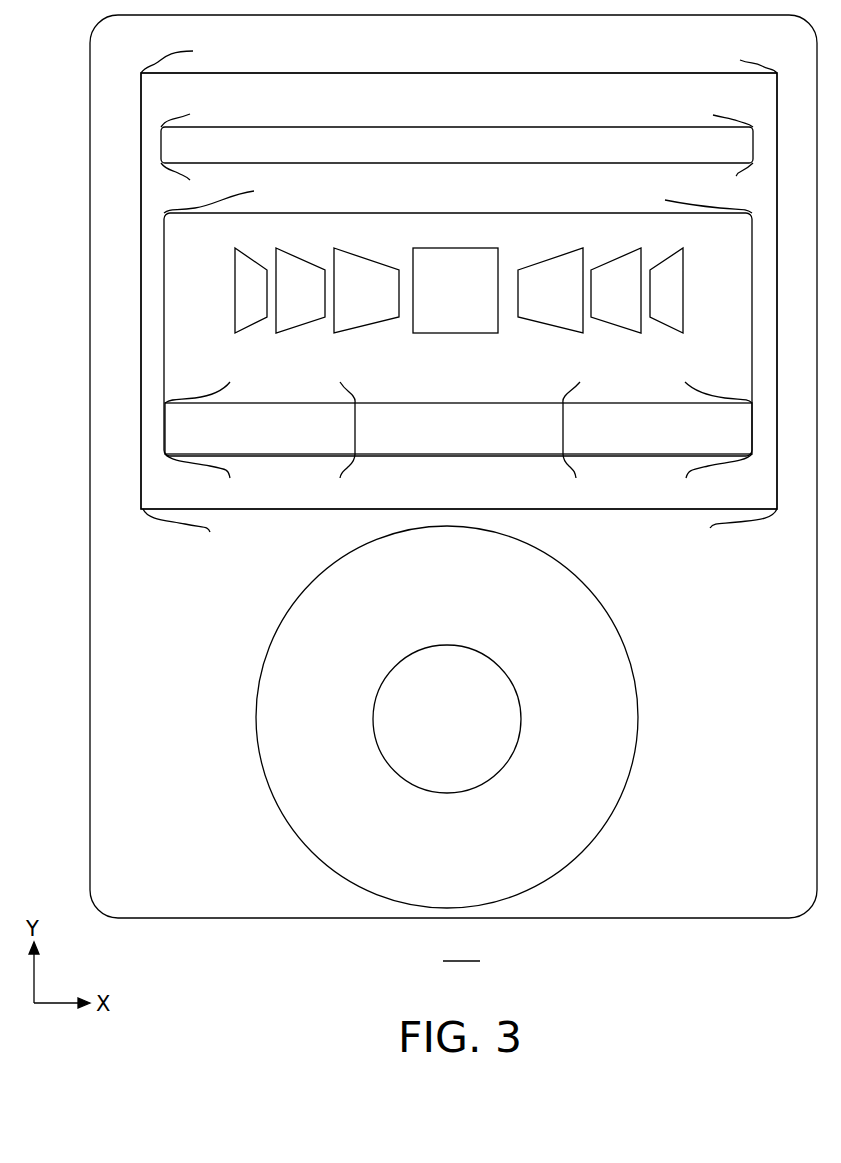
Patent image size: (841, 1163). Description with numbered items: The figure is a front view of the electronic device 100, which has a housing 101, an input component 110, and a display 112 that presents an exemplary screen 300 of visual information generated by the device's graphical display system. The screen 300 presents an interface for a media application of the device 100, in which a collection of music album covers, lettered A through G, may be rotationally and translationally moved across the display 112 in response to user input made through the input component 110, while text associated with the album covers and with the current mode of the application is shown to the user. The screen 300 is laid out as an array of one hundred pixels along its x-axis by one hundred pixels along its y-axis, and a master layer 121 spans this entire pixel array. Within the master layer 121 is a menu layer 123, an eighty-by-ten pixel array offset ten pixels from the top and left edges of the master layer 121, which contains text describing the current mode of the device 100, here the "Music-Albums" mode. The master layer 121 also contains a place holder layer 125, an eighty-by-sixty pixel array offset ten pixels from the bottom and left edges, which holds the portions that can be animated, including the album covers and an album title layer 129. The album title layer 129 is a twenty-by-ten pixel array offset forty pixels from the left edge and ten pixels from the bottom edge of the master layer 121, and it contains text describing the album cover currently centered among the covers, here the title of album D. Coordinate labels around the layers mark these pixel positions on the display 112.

The electronic device 100 is at (430, 492).
The housing 101 is at (224, 925).
The input component 110 is at (276, 815).
The display 112 is at (623, 519).
The master layer 121 is at (460, 73).
The menu layer 123 is at (437, 127).
The place holder layer 125 is at (440, 213).
The album title layer 129 is at (565, 428).
The screen 300 is at (208, 303).